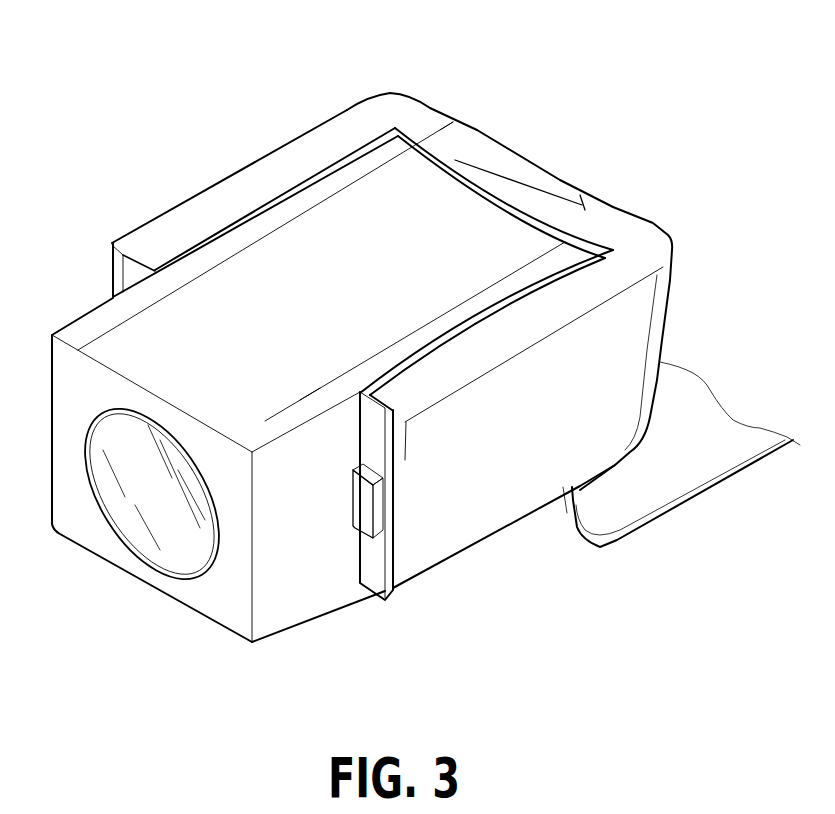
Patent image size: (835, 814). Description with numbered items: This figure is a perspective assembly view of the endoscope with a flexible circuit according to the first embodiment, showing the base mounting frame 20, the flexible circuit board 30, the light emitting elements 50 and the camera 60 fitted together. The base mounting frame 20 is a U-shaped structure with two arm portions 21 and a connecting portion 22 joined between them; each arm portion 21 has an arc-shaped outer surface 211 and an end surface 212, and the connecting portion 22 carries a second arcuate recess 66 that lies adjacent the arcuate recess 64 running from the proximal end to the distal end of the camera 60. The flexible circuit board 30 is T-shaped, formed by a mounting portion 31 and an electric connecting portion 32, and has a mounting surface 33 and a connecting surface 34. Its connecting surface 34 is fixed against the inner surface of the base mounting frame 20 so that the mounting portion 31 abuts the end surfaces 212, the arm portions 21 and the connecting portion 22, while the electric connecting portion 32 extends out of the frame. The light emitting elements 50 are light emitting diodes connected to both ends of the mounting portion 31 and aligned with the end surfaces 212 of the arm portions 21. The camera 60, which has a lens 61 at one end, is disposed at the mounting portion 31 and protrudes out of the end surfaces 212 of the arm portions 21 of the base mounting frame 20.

The base mounting frame 20 is at (309, 110).
The arm portions 21 is at (220, 183).
The arc-shaped outer surface 211 is at (400, 507).
The end surface 212 is at (403, 450).
The connecting portion 22 is at (584, 212).
The flexible circuit board 30 is at (419, 120).
The mounting portion 31 is at (461, 165).
The electric connecting portion 32 is at (660, 485).
The mounting surface 33 is at (478, 188).
The connecting surface 34 is at (556, 190).
The light emitting elements 50 is at (352, 522).
The camera 60 is at (75, 314).
The lens 61 is at (160, 515).
The arcuate recess 64 is at (362, 232).
The second arcuate recess 66 is at (453, 150).